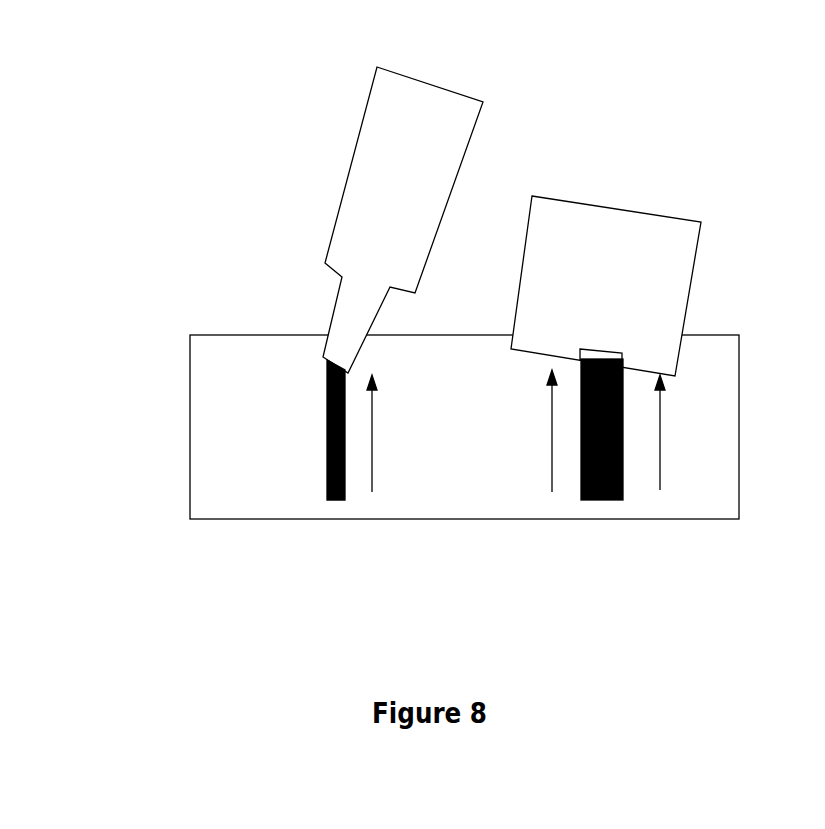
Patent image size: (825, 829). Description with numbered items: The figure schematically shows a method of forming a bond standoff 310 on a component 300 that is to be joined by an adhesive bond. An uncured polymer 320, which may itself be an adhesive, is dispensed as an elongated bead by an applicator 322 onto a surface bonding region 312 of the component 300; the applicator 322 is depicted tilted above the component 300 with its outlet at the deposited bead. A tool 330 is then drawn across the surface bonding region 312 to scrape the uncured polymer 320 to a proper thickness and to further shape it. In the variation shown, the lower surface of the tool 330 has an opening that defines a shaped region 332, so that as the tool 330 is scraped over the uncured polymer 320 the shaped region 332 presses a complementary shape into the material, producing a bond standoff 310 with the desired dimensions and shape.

The component 300 is at (202, 332).
The surface bonding region 312 is at (228, 445).
The bond standoff 310 is at (603, 502).
The uncured polymer 320 is at (332, 500).
The applicator 322 is at (403, 220).
The tool 330 is at (606, 286).
The shaped region 332 is at (610, 340).